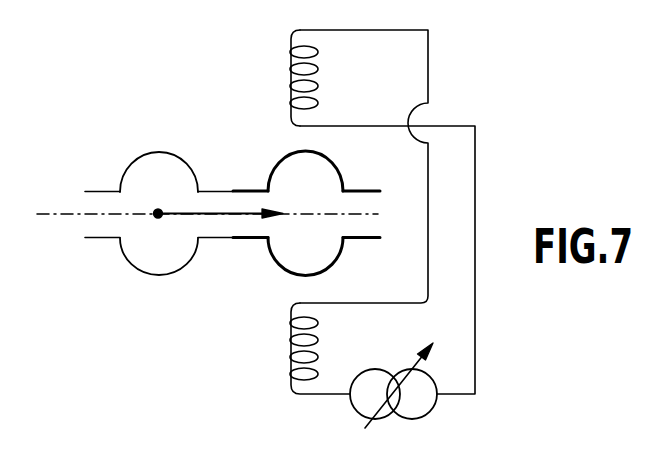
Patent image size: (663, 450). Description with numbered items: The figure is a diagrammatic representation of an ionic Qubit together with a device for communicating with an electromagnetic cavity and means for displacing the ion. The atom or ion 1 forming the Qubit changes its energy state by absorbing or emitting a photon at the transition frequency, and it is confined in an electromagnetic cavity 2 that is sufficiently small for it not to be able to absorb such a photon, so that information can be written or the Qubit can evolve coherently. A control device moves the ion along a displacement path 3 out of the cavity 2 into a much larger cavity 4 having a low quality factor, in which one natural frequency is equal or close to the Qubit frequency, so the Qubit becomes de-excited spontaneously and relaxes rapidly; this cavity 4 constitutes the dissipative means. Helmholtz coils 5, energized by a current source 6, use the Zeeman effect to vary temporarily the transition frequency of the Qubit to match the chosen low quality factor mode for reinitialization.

The atom or ion 1 is at (158, 209).
The electromagnetic cavity 2 is at (135, 163).
The particle beam direction 3 is at (223, 216).
The cavity 4 is at (280, 160).
The Helmholtz coils 5 is at (290, 73).
The current source 6 is at (405, 415).